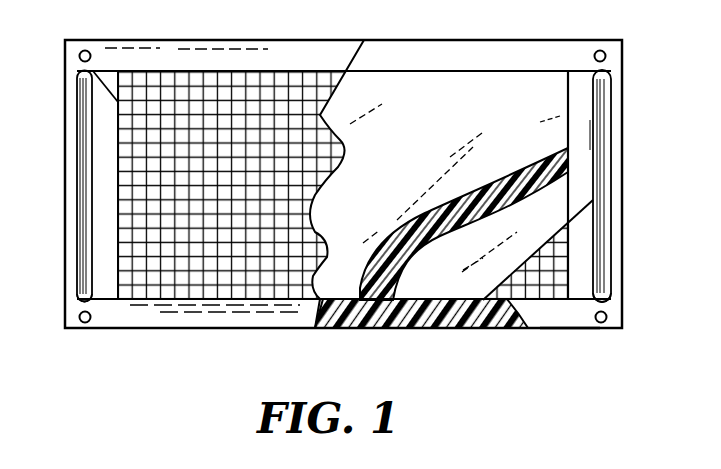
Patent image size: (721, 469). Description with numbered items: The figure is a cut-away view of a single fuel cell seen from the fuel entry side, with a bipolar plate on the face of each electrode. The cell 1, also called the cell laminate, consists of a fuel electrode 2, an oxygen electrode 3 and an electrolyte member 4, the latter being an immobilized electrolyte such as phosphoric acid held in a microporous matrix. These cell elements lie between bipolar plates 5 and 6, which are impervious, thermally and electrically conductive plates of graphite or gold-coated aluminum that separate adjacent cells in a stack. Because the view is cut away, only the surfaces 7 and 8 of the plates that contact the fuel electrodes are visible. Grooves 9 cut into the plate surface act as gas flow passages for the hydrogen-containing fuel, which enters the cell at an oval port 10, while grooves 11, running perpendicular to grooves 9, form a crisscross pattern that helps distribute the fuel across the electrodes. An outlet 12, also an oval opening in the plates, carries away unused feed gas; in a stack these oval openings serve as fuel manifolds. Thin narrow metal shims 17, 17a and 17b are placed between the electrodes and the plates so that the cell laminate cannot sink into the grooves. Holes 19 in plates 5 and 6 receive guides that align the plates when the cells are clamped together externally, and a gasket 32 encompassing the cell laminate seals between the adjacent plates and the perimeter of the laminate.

The cell 1 is at (430, 66).
The fuel electrode 2 is at (463, 283).
The oxygen electrode 3 is at (452, 139).
The electrolyte member 4 is at (463, 207).
The bipolar plate 5 is at (201, 320).
The bipolar plate 6 is at (577, 320).
The plate surface 7 is at (72, 304).
The plate surface 8 is at (612, 302).
The grooves 9 is at (150, 210).
The oval port 10 is at (80, 100).
The grooves 11 is at (275, 93).
The outlet 12 is at (603, 76).
The metal shim 17 is at (590, 251).
The metal shim 17a is at (588, 133).
The metal shim 17b is at (107, 258).
The holes 19 is at (86, 50).
The gasket 32 is at (380, 328).